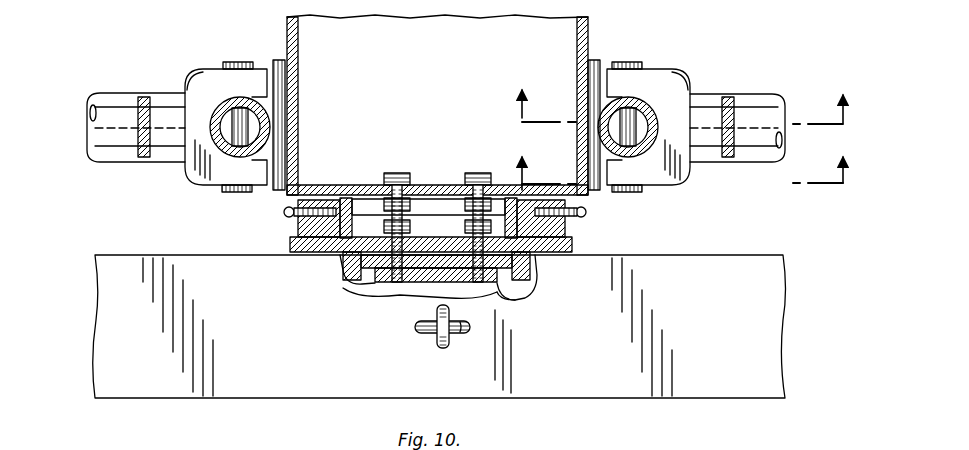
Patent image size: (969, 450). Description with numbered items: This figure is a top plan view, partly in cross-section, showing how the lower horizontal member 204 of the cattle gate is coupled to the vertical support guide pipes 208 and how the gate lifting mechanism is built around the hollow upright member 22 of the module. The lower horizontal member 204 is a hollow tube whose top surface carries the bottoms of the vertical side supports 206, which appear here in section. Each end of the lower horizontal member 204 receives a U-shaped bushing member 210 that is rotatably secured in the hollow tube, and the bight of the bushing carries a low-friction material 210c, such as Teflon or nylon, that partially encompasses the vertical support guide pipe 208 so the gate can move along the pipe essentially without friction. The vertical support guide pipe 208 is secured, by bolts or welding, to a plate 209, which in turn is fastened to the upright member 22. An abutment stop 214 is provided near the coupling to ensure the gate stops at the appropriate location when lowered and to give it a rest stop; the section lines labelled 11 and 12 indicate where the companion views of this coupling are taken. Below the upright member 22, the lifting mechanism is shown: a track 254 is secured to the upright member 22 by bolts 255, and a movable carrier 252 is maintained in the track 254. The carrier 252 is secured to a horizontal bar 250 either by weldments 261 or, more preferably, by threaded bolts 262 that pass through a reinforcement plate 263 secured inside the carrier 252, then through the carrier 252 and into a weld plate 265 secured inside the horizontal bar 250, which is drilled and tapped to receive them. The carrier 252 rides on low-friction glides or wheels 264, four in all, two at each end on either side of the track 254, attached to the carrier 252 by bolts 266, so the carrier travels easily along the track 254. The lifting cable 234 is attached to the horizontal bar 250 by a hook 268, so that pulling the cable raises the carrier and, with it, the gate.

The hollow upright member 22 is at (443, 60).
The plate 209 is at (288, 72).
The U-shaped bushing member 210 is at (190, 177).
The low-friction material 210c is at (205, 75).
The vertical support guide pipe 208 is at (225, 105).
The abutment stop 214 is at (235, 62).
The lower horizontal member 204 is at (122, 148).
The vertical side support 206 is at (140, 98).
The section line 12 is at (686, 96).
The section line 11 is at (686, 164).
The bolt 255 is at (428, 146).
The reinforcement plate 263 is at (378, 225).
The bolt 266 is at (284, 212).
The weldment 261 is at (300, 247).
The horizontal bar 250 is at (273, 367).
The threaded bolt 262 is at (362, 284).
The track 254 is at (345, 253).
The glide or wheel 264 is at (352, 262).
The carrier 252 is at (378, 276).
The weld plate 265 is at (505, 290).
The cable 234 is at (432, 335).
The hook 268 is at (468, 333).